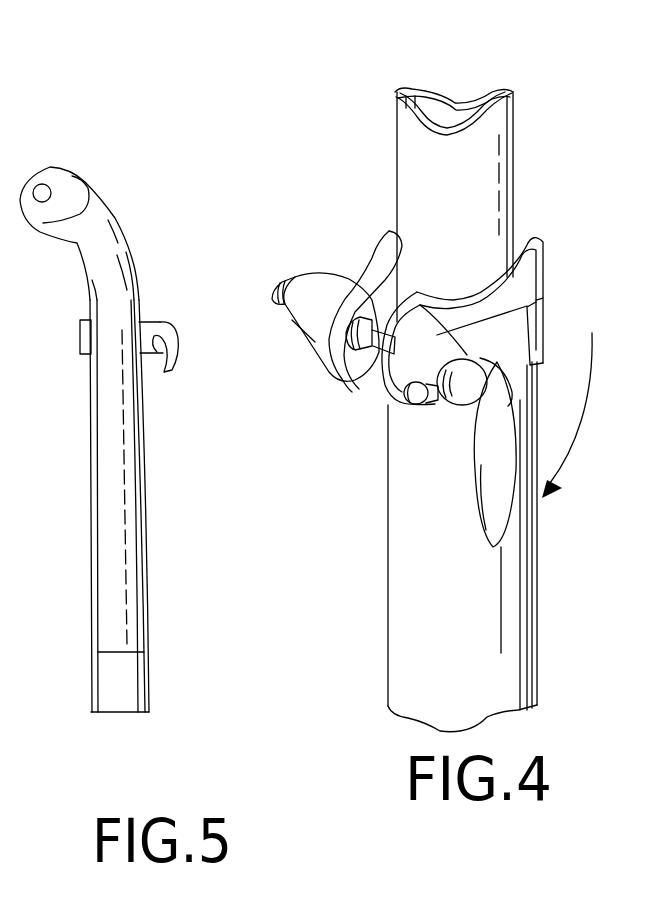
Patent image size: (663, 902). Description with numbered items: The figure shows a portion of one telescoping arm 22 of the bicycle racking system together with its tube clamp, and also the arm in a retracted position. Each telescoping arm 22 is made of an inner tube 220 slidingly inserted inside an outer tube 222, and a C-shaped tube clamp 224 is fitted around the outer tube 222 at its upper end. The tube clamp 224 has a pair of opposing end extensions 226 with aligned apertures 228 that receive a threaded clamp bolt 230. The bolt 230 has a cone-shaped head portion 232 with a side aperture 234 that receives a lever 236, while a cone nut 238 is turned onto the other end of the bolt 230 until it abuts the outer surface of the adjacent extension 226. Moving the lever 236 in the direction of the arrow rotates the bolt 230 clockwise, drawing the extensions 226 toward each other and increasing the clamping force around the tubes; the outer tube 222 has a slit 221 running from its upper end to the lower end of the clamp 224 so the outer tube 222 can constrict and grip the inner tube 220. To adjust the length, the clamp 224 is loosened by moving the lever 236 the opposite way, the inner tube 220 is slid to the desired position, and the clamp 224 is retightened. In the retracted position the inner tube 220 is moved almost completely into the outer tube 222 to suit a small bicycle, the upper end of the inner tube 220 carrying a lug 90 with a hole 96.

In FIG. 5, the telescoping arm 22 is at (80, 290).
In FIG. 4, the telescoping arm 22 is at (390, 82).
In FIG. 5, the mounting lug 90 is at (58, 167).
In FIG. 5, the mounting hole 96 is at (40, 184).
In FIG. 5, the inner tube 220 is at (113, 565).
In FIG. 4, the inner tube 220 is at (407, 155).
In FIG. 4, the slit 221 is at (407, 290).
In FIG. 5, the outer tube 222 is at (92, 668).
In FIG. 4, the outer tube 222 is at (405, 593).
In FIG. 5, the tube clamp 224 is at (72, 338).
In FIG. 4, the tube clamp 224 is at (522, 224).
In FIG. 4, the end extensions 226 is at (312, 347).
In FIG. 4, the apertures 228 is at (340, 372).
In FIG. 4, the clamp bolt 230 is at (280, 280).
In FIG. 4, the head portion 232 is at (556, 250).
In FIG. 4, the side aperture 234 is at (405, 413).
In FIG. 4, the lever 236 is at (498, 492).
In FIG. 4, the cone nut 238 is at (327, 290).